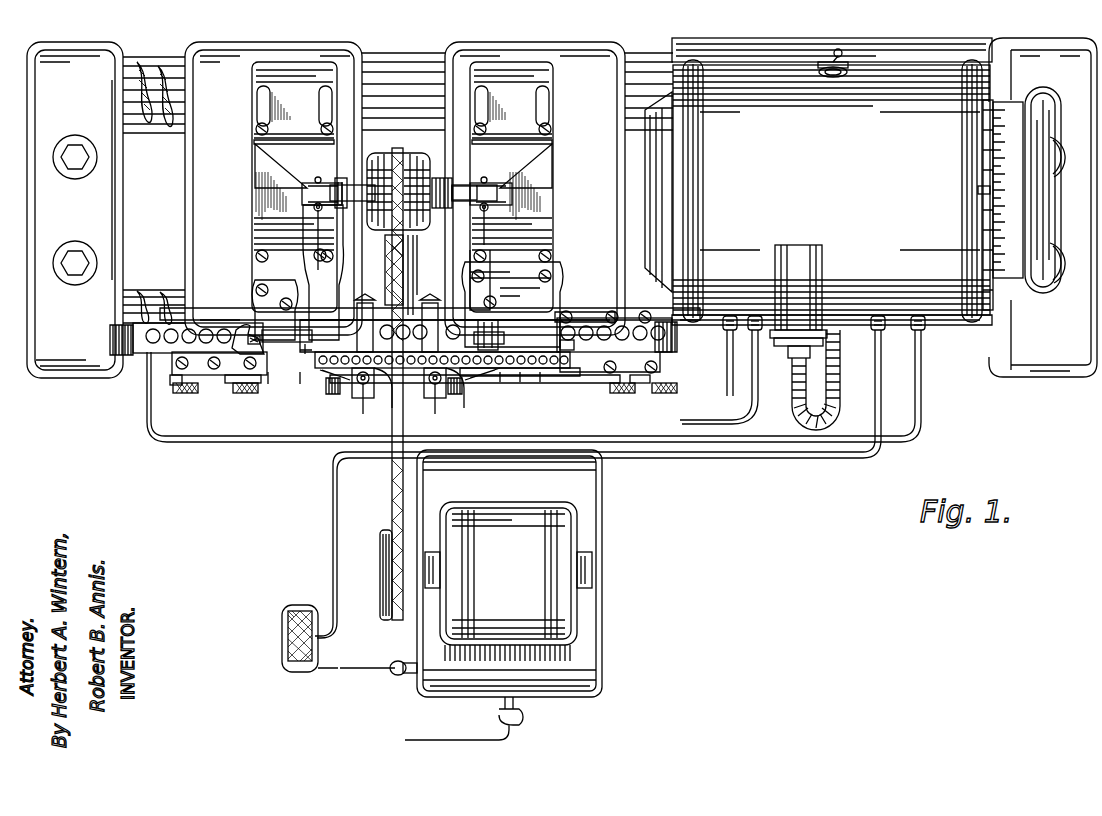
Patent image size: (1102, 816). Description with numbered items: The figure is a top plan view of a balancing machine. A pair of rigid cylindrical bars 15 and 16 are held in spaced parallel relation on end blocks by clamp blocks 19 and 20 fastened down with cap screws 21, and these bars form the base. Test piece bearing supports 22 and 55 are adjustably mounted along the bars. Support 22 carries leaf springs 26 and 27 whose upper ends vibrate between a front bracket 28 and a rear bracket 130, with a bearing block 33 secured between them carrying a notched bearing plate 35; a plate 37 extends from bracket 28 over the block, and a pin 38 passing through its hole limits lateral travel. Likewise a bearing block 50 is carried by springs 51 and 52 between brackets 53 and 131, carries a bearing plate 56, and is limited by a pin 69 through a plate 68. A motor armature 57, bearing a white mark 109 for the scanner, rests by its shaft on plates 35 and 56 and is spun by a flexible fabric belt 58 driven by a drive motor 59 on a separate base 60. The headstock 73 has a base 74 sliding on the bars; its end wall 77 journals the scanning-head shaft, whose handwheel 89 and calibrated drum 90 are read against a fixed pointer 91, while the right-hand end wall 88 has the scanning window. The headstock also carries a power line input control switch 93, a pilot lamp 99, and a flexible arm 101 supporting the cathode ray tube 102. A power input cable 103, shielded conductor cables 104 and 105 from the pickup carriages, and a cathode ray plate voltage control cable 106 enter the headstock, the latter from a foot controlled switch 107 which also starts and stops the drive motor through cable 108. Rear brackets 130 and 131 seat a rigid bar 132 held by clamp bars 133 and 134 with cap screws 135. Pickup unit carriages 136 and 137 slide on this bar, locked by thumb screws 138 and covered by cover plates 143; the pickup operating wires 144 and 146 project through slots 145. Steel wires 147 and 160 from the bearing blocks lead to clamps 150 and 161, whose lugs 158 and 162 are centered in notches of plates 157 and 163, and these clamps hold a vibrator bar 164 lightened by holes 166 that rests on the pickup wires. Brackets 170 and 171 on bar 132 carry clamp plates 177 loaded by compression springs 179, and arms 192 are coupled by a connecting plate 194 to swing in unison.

The bar 15 is at (145, 132).
The bar 16 is at (146, 292).
The clamp block 19 is at (1036, 374).
The clamp block 20 is at (81, 372).
The cap screw 21 is at (75, 180).
The test piece bearing support 22 is at (216, 60).
The leaf spring 26 is at (264, 165).
The leaf spring 27 is at (270, 222).
The bracket 28 is at (254, 146).
The bearing block 33 is at (303, 193).
The bearing plate 35 is at (339, 176).
The plate 37 is at (293, 150).
The pin 38 is at (318, 177).
The bearing block 50 is at (510, 192).
The spring 51 is at (544, 170).
The spring 52 is at (542, 224).
The bracket 53 is at (542, 134).
The test piece bearing support 55 is at (583, 56).
The bearing plate 56 is at (466, 172).
The motor armature 57 is at (420, 165).
The flexible fabric belt 58 is at (394, 156).
The drive motor 59 is at (508, 581).
The base 60 is at (584, 416).
The plate 68 is at (508, 146).
The pin 69 is at (484, 178).
The headstock 73 is at (831, 190).
The base 74 is at (942, 44).
The end wall 77 is at (978, 232).
The right-hand end wall 88 is at (694, 182).
The handwheel 89 is at (1048, 116).
The drum 90 is at (1014, 102).
The fixed pointer 91 is at (978, 192).
The power line input control switch 93 is at (832, 60).
The pilot lamp 99 is at (833, 78).
The flexible arm 101 is at (842, 352).
The cathode ray tube 102 is at (803, 252).
The power input cable 103 is at (734, 396).
The shielded conductor cable 104 is at (672, 440).
The shielded conductor cable 105 is at (802, 416).
The cathode ray plate voltage control cable 106 is at (738, 452).
The foot controlled switch 107 is at (282, 646).
The cable 108 is at (332, 670).
The white mark 109 is at (388, 275).
The rear bracket 130 is at (256, 246).
The rear bracket 131 is at (548, 241).
The rigid bar 132 is at (112, 345).
The clamp bar 133 is at (293, 370).
The clamp bar 134 is at (518, 370).
The cap screw 135 is at (270, 386).
The pickup unit carriage 136 is at (236, 374).
The pickup unit carriage 137 is at (648, 395).
The thumb screw 138 is at (178, 394).
The carriage cover plate 143 is at (164, 364).
The pickup unit operating wire 144 is at (254, 334).
The slot 145 is at (262, 338).
The operating wire 146 is at (570, 350).
The steel wire 147 is at (316, 238).
The clamp 150 is at (314, 345).
The plate 157 is at (256, 300).
The lug 158 is at (287, 339).
The steel wire 160 is at (492, 238).
The clamp 161 is at (500, 340).
The lug 162 is at (484, 328).
The cover plate 163 is at (548, 274).
The vibrator bar 164 is at (134, 396).
The holes 166 is at (582, 329).
The bracket 170 is at (360, 398).
The bracket 171 is at (446, 398).
The clamp plate 177 is at (436, 422).
The compression spring 179 is at (330, 396).
The arm 192 is at (480, 398).
The connecting plate 194 is at (435, 331).